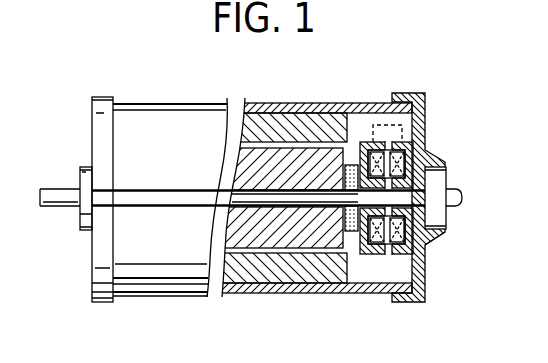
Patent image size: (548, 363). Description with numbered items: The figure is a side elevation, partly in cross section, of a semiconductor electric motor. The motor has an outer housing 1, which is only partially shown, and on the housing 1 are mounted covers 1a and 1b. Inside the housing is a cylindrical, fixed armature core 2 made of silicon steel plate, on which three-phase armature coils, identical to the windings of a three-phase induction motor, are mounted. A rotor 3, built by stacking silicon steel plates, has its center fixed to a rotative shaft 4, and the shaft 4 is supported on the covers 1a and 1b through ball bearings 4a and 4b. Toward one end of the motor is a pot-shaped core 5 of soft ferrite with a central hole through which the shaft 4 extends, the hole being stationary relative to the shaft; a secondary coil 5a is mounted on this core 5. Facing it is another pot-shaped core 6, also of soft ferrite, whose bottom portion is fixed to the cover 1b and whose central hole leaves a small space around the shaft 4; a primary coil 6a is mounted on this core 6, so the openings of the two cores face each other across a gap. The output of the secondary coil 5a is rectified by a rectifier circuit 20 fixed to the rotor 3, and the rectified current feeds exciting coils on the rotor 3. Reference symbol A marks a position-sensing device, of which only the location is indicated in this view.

The outer housing 1 is at (181, 101).
The cover 1a is at (107, 97).
The cover 1b is at (417, 100).
The fixed armature core 2 is at (315, 116).
The rotor 3 is at (275, 118).
The rectifier circuit 20 is at (352, 166).
The rotative shaft 4 is at (48, 210).
The ball bearing 4a is at (84, 166).
The ball bearing 4b is at (440, 176).
The pot-shaped core 5 is at (360, 256).
The secondary coil 5a is at (372, 253).
The pot-shaped core 6 is at (392, 246).
The primary coil 6a is at (430, 247).
The position-sensing device A is at (392, 124).